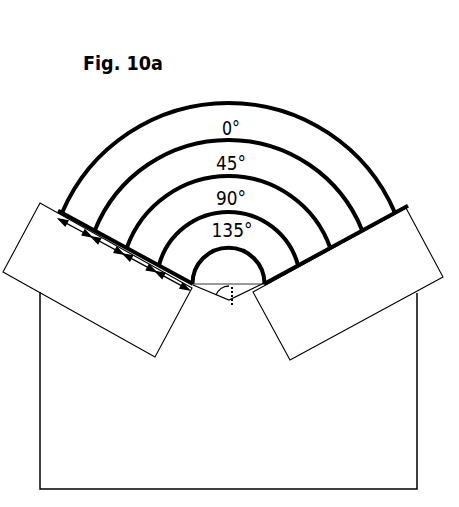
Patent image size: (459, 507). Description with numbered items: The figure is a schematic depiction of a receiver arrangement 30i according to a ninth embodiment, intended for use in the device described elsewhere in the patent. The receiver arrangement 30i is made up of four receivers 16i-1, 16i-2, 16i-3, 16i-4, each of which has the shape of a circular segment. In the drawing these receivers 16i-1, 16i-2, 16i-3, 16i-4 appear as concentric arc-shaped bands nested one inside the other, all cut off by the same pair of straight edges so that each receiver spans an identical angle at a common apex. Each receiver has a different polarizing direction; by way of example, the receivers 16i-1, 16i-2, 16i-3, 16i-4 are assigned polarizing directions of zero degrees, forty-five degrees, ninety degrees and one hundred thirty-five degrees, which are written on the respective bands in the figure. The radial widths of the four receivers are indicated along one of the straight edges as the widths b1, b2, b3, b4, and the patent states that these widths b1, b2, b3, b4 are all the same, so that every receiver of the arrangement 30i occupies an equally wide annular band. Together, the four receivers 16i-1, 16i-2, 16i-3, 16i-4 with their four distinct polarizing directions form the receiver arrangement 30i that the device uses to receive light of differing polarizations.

The receiver arrangement 30i is at (240, 73).
The receiver 16i-1 is at (360, 207).
The receiver 16i-2 is at (332, 227).
The receiver 16i-3 is at (300, 240).
The receiver 16i-4 is at (268, 258).
The width b1 is at (69, 238).
The width b2 is at (98, 254).
The width b3 is at (130, 273).
The width b4 is at (163, 288).